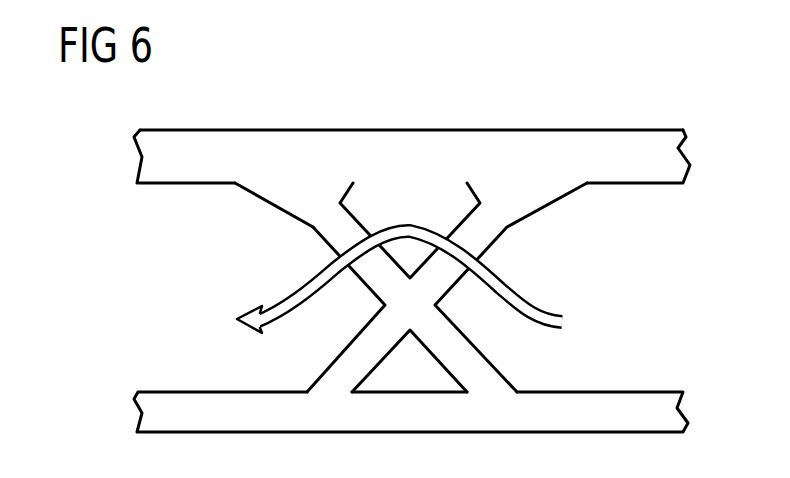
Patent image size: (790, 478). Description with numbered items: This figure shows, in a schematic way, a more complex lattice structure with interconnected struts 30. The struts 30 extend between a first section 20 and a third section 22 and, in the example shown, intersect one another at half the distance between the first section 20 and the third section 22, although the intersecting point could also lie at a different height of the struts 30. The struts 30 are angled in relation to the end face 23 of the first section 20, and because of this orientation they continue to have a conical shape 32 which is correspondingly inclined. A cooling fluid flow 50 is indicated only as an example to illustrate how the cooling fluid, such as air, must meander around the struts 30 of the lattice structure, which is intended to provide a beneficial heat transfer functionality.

The first section 20 is at (375, 118).
The third section 22 is at (130, 413).
The end face 23 is at (536, 127).
The struts 30 is at (411, 234).
The conical shape 32 is at (293, 193).
The cooling fluid flow 50 is at (533, 312).